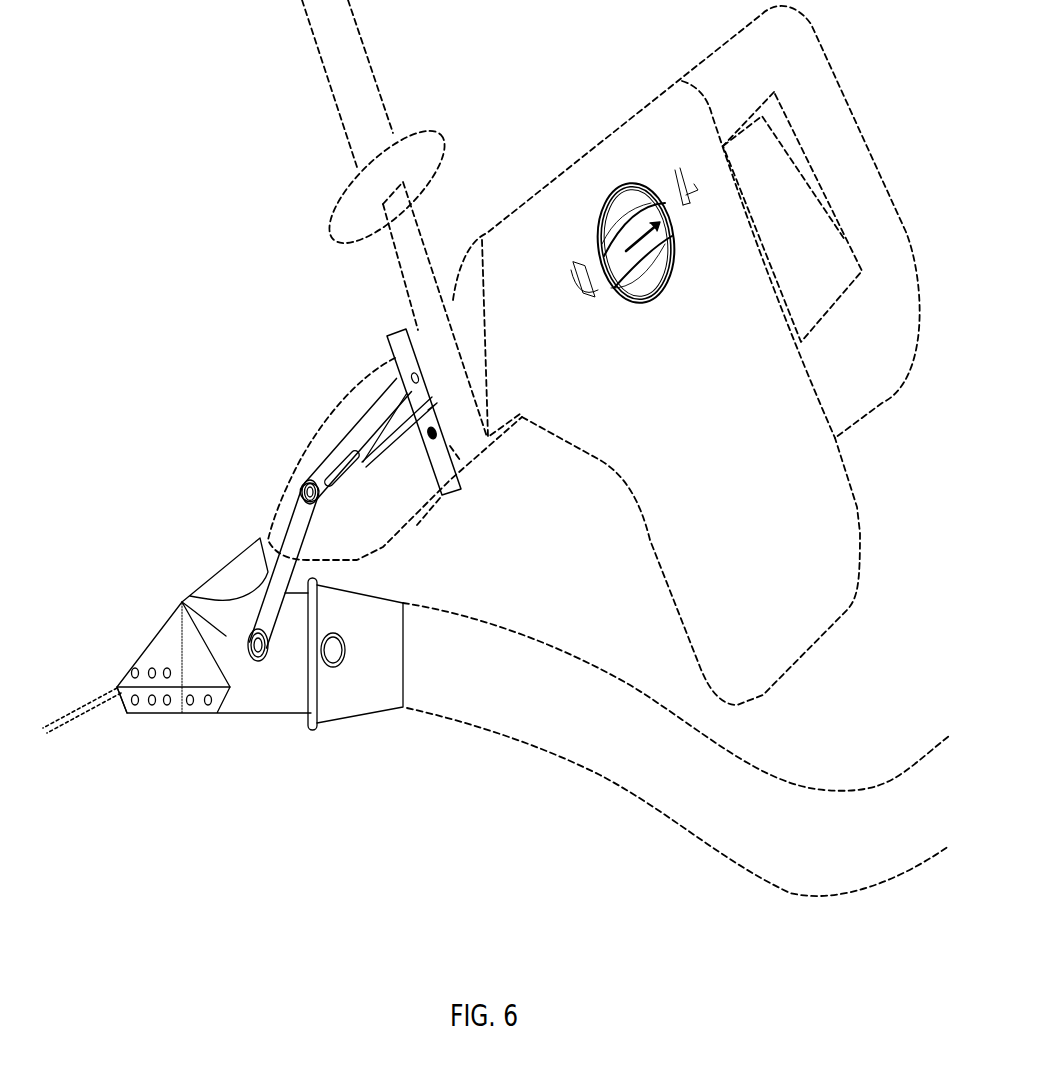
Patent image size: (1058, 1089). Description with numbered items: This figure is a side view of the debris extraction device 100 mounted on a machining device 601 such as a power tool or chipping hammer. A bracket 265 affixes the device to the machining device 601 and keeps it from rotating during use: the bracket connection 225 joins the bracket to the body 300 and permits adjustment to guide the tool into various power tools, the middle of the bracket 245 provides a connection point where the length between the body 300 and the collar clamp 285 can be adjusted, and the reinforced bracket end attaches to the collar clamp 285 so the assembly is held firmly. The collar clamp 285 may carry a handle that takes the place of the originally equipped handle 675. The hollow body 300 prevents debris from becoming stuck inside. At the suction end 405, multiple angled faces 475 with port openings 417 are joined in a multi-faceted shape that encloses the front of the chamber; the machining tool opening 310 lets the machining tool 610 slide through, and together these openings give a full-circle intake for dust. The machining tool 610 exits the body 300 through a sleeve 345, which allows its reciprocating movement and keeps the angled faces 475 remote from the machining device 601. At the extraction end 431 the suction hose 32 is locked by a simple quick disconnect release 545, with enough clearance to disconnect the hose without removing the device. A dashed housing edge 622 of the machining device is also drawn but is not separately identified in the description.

The suction hose 32 is at (470, 688).
The debris extraction device 100 is at (178, 459).
The bracket connection 225 is at (260, 660).
The middle of the bracket 245 is at (305, 483).
The bracket 265 is at (404, 414).
The collar clamp 285 is at (390, 340).
The body 300 is at (182, 602).
The machining tool opening 310 is at (117, 688).
The sleeve 345 is at (243, 568).
The suction end 405 is at (158, 743).
The port openings 417 is at (191, 706).
The extraction end 431 is at (365, 663).
The angled faces 475 is at (160, 640).
The quick disconnect release 545 is at (333, 664).
The machining device 601 is at (531, 300).
The machining tool 610 is at (87, 697).
The housing edge 622 is at (327, 437).
The originally equipped handle 675 is at (425, 265).